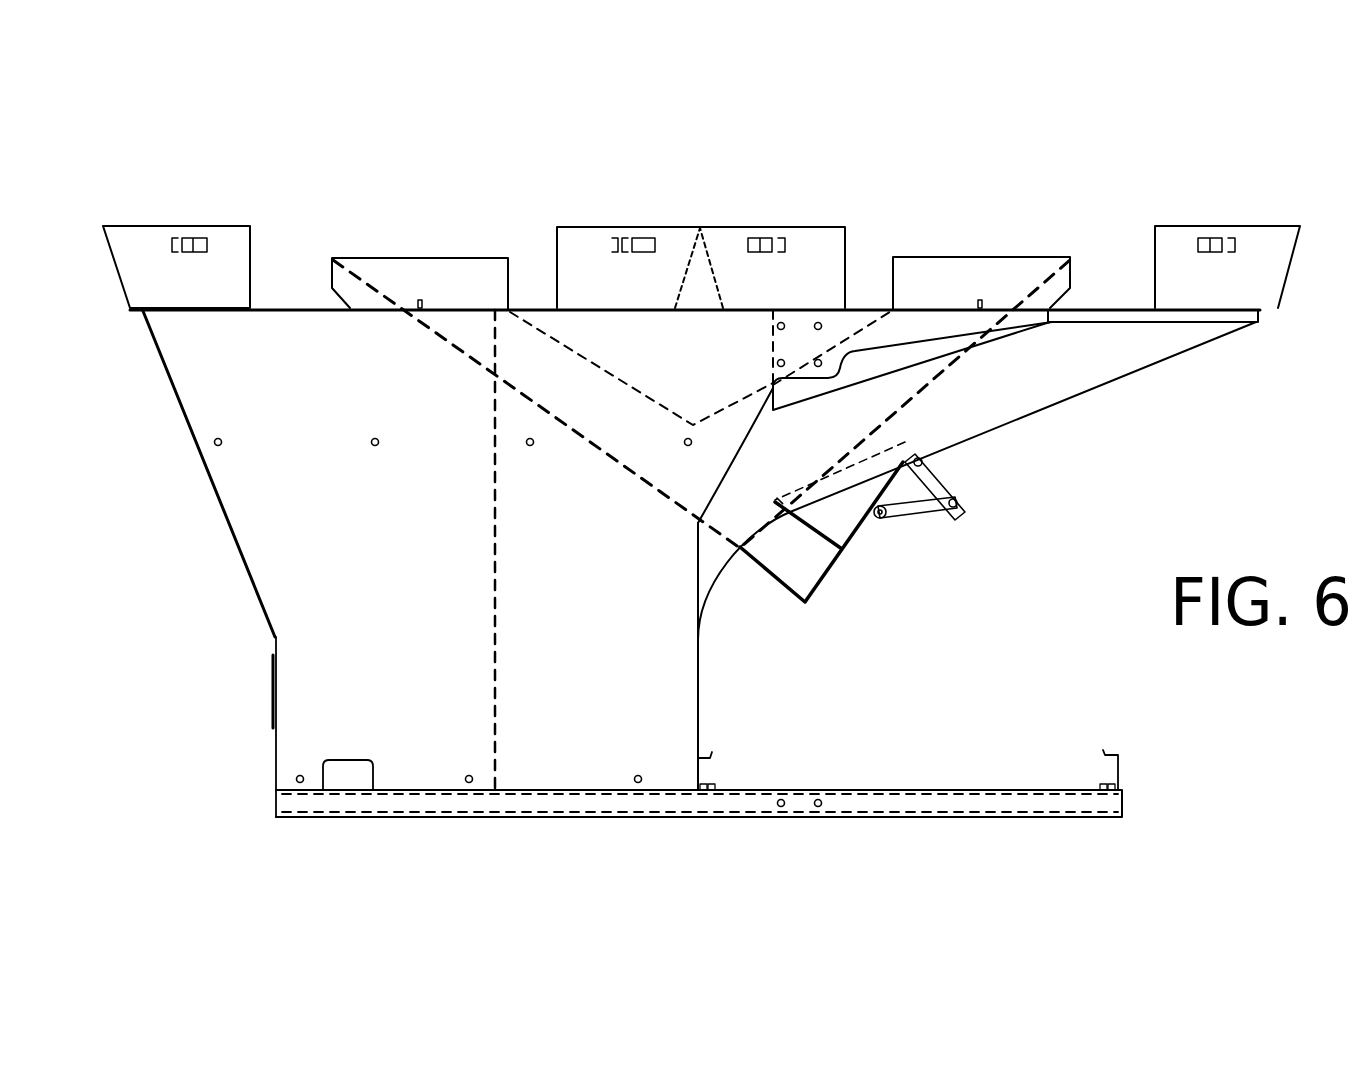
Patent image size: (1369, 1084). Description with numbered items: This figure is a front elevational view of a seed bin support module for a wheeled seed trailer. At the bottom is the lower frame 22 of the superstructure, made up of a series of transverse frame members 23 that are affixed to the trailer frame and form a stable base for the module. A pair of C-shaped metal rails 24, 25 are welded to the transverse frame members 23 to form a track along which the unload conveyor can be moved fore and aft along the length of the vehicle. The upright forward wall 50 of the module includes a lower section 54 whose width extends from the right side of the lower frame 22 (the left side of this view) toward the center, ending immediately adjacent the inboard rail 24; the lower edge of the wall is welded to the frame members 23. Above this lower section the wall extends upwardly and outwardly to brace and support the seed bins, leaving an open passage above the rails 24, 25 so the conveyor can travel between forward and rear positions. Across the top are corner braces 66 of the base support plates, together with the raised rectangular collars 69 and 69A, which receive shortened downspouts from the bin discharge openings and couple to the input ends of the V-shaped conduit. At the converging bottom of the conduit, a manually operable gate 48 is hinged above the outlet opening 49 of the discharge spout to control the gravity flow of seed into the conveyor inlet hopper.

The lower frame 22 is at (943, 802).
The transverse frame members 23 is at (583, 820).
The inboard rail 24 is at (712, 755).
The left rail 25 is at (1110, 752).
The manually operable gate 48 is at (945, 478).
The outlet opening 49 is at (838, 560).
The forward wall 50 is at (272, 512).
The lower section 54 is at (620, 716).
The corner brace 66 is at (152, 225).
The raised rectangular collar 69 is at (432, 258).
The collar for left side support brace 69A is at (958, 257).